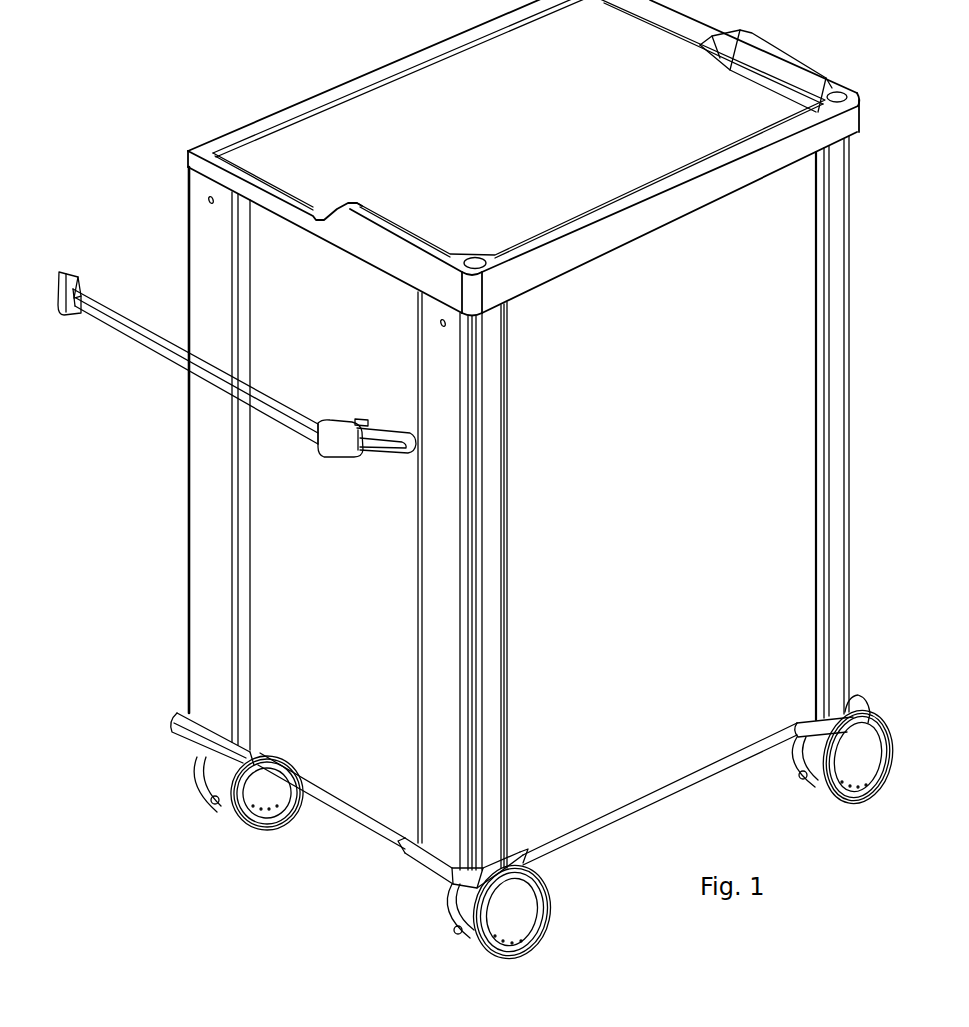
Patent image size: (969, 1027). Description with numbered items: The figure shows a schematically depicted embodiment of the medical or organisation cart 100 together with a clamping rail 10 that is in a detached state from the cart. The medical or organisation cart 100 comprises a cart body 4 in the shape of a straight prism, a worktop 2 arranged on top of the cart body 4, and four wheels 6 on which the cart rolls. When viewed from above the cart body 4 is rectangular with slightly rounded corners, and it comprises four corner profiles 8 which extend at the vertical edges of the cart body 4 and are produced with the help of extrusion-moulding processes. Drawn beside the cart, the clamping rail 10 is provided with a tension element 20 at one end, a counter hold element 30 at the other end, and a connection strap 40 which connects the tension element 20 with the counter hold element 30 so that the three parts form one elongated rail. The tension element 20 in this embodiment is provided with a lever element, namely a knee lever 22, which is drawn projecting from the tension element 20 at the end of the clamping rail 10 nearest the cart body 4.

The worktop 2 is at (462, 143).
The cart body 4 is at (778, 485).
The wheels 6 is at (265, 796).
The corner profiles 8 is at (215, 623).
The clamping rail 10 is at (108, 342).
The tension element 20 is at (338, 447).
The knee lever 22 is at (373, 460).
The counter hold element 30 is at (58, 268).
The connection strap 40 is at (220, 387).
The medical or organisation cart 100 is at (322, 838).